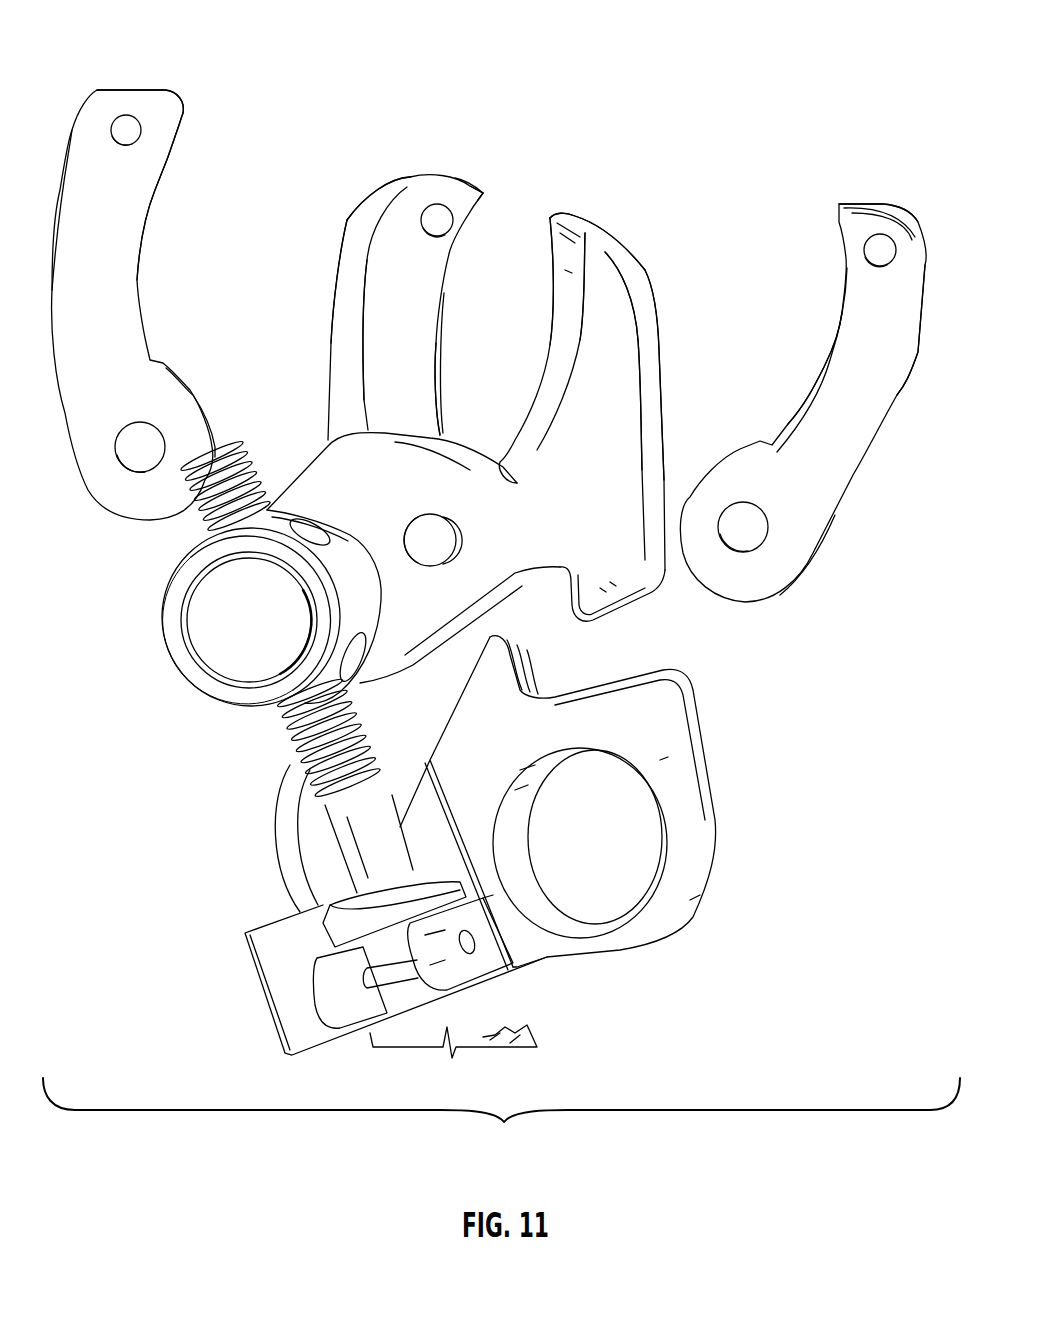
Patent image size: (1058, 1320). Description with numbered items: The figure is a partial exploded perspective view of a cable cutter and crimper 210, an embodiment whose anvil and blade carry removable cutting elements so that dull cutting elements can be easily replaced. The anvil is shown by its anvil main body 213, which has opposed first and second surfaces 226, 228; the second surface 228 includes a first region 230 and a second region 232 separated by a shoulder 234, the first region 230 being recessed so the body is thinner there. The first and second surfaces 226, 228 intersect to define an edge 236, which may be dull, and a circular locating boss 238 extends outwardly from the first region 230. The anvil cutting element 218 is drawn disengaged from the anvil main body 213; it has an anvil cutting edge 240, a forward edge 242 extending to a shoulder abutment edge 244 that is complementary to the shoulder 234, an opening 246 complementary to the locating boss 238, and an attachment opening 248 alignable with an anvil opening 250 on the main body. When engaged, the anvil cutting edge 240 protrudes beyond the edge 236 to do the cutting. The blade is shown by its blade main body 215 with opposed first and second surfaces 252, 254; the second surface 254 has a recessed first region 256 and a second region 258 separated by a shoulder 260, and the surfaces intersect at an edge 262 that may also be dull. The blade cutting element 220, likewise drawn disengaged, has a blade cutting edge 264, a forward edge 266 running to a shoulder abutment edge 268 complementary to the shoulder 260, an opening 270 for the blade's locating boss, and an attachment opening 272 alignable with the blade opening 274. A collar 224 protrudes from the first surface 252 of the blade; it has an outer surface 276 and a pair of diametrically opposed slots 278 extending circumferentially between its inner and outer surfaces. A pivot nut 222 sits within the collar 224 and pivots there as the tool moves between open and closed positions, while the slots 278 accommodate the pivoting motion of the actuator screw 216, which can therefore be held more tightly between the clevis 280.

The cable cutter and crimper 210 is at (501, 1116).
The anvil main body 213 is at (318, 290).
The blade main body 215 is at (671, 328).
The actuator screw 216 is at (268, 748).
The anvil cutting element 218 is at (60, 138).
The blade cutting element 220 is at (910, 400).
The pivot nut 222 is at (192, 612).
The collar 224 is at (178, 686).
The first surface 226 is at (387, 188).
The second surface 228 is at (465, 193).
The first region 230 is at (523, 173).
The second region 232 is at (362, 240).
The shoulder 234 is at (363, 350).
The edge 236 is at (437, 380).
The locating boss 238 is at (431, 217).
The anvil cutting edge 240 is at (143, 213).
The forward edge 242 is at (170, 92).
The shoulder abutment edge 244 is at (83, 110).
The opening 246 is at (127, 125).
The attachment opening 248 is at (140, 455).
The anvil opening 250 is at (529, 586).
The first surface 252 is at (627, 363).
The second surface 254 is at (600, 230).
The first region 256 is at (620, 254).
The second region 258 is at (650, 287).
The shoulder 260 is at (630, 248).
The edge 262 is at (551, 247).
The blade cutting edge 264 is at (822, 318).
The forward edge 266 is at (872, 200).
The shoulder abutment edge 268 is at (910, 332).
The opening 270 is at (875, 245).
The attachment opening 272 is at (733, 505).
The blade opening 274 is at (450, 540).
The outer surface 276 is at (221, 703).
The slots 278 is at (298, 527).
The clevis 280 is at (488, 958).